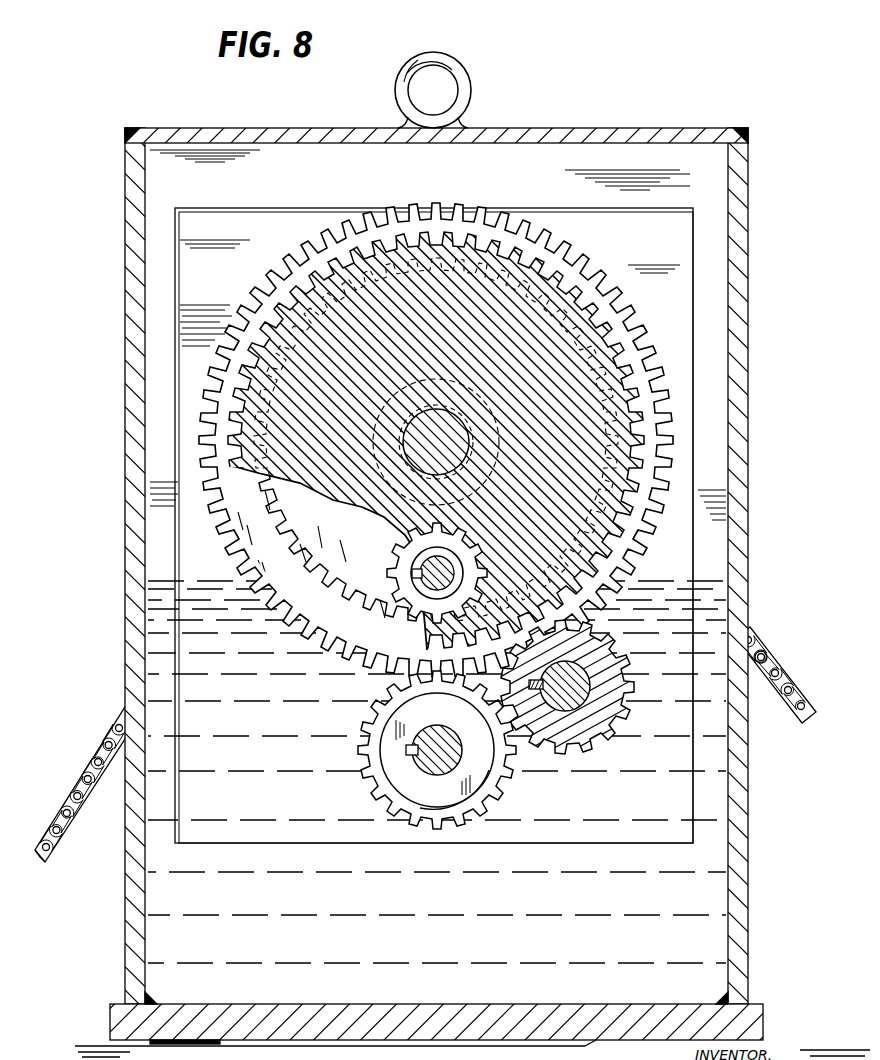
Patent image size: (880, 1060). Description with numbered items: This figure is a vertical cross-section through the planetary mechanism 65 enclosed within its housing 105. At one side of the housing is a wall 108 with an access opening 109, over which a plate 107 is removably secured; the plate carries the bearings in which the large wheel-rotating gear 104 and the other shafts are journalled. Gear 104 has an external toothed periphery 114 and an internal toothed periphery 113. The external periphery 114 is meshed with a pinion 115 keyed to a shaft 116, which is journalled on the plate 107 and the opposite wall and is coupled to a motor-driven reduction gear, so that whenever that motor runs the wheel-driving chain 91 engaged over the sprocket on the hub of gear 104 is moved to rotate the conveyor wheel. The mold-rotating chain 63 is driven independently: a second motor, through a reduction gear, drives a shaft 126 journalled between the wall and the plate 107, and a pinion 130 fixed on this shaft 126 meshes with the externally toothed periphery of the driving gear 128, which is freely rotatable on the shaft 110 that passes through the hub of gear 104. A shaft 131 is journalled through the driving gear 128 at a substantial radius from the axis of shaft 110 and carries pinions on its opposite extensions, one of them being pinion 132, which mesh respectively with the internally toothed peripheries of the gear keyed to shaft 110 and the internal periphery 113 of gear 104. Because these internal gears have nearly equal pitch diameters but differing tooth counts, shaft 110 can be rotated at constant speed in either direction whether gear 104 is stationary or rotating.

The planetary mechanism 65 is at (759, 483).
The housing 105 is at (562, 129).
The wall 108 is at (158, 177).
The plate 107 is at (190, 287).
The access opening 109 is at (265, 210).
The gear 104 is at (617, 328).
The external toothed periphery 114 is at (635, 340).
The internal toothed periphery 113 is at (620, 372).
The driving gear 128 is at (552, 270).
The shaft 110 is at (358, 500).
The pinion 132 is at (393, 541).
The shaft 131 is at (417, 577).
The pinion 130 is at (625, 712).
The shaft 126 is at (573, 690).
The pinion 115 is at (360, 750).
The shaft 116 is at (420, 738).
The mold-rotating chain 63 is at (792, 690).
The wheel-driving chain 91 is at (771, 672).